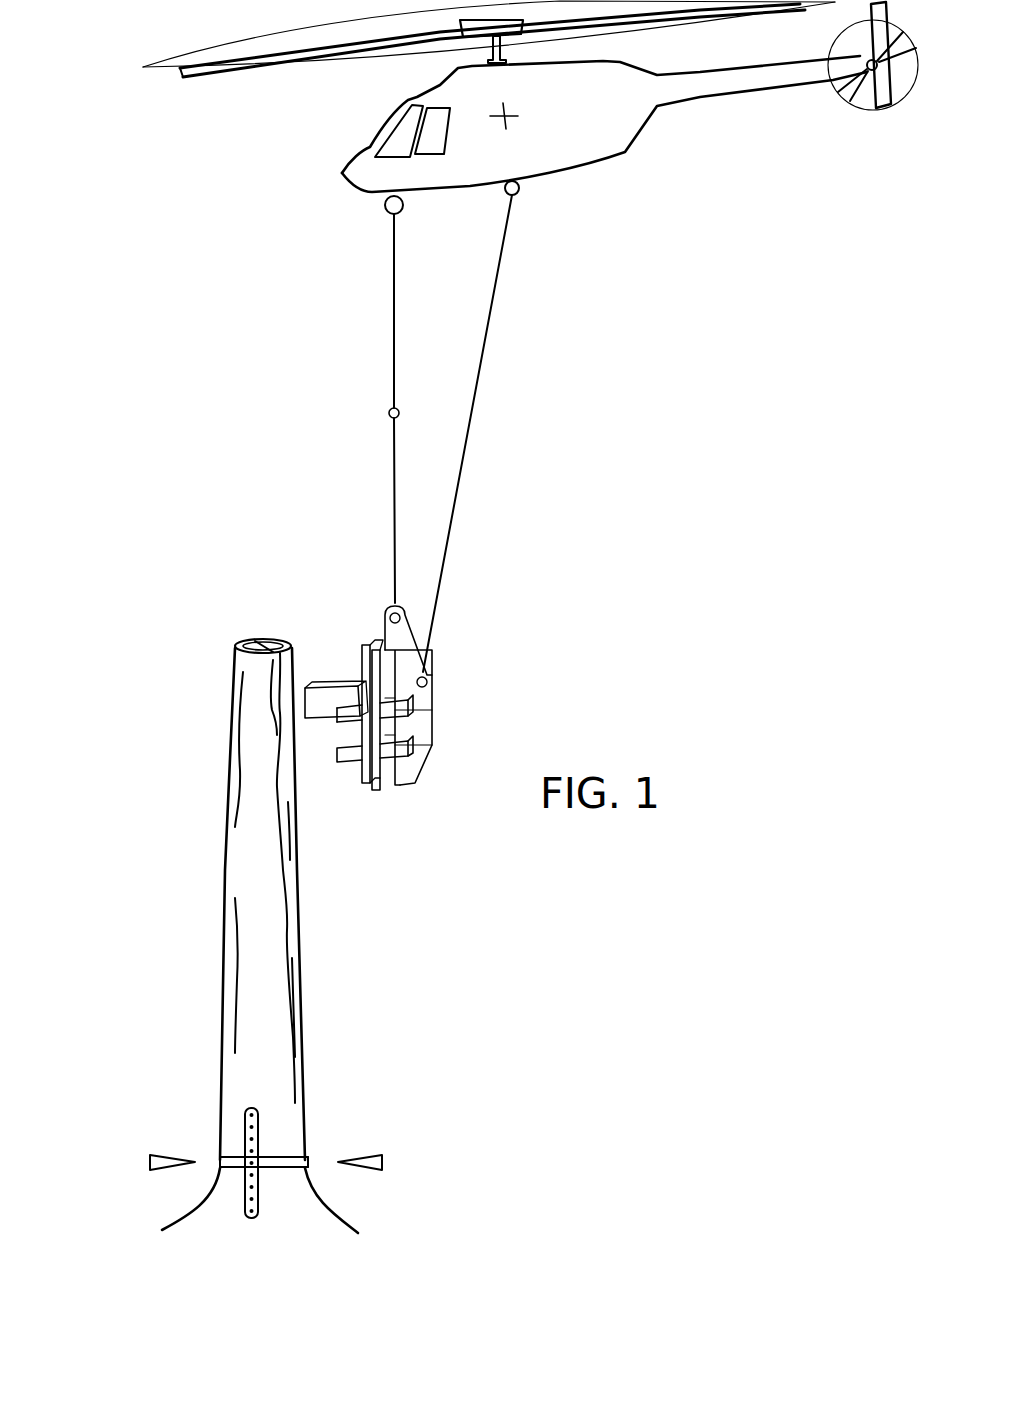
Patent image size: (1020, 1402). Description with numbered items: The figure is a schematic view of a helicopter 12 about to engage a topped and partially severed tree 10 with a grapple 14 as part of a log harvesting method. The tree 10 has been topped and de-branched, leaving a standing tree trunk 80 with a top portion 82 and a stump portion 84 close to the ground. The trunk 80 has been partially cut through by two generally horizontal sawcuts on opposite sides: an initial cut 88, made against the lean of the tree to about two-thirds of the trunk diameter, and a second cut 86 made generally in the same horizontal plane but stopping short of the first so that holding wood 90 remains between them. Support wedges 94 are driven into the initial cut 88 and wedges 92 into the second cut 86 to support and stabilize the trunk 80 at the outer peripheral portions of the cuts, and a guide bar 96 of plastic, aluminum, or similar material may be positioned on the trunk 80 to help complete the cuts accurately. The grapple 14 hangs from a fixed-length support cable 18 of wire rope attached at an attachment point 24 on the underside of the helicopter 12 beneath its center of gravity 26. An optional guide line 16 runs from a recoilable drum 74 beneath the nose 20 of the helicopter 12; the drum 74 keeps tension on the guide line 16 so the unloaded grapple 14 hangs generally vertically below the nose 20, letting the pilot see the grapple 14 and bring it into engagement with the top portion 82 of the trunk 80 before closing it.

The tree 10 is at (338, 883).
The helicopter 12 is at (657, 143).
The grapple 14 is at (443, 713).
The guide line 16 is at (393, 505).
The support cable 18 is at (480, 378).
The nose 20 is at (343, 173).
The attachment point 24 is at (518, 195).
The center of gravity 26 is at (505, 123).
The recoilable drum 74 is at (386, 207).
The tree trunk 80 is at (298, 967).
The top portion 82 is at (250, 637).
The stump portion 84 is at (308, 1207).
The second cut 86 is at (220, 1163).
The initial cut 88 is at (313, 1162).
The holding wood 90 is at (262, 1157).
The wedges 92 is at (150, 1153).
The support wedges 94 is at (380, 1154).
The guide bar 96 is at (245, 1123).